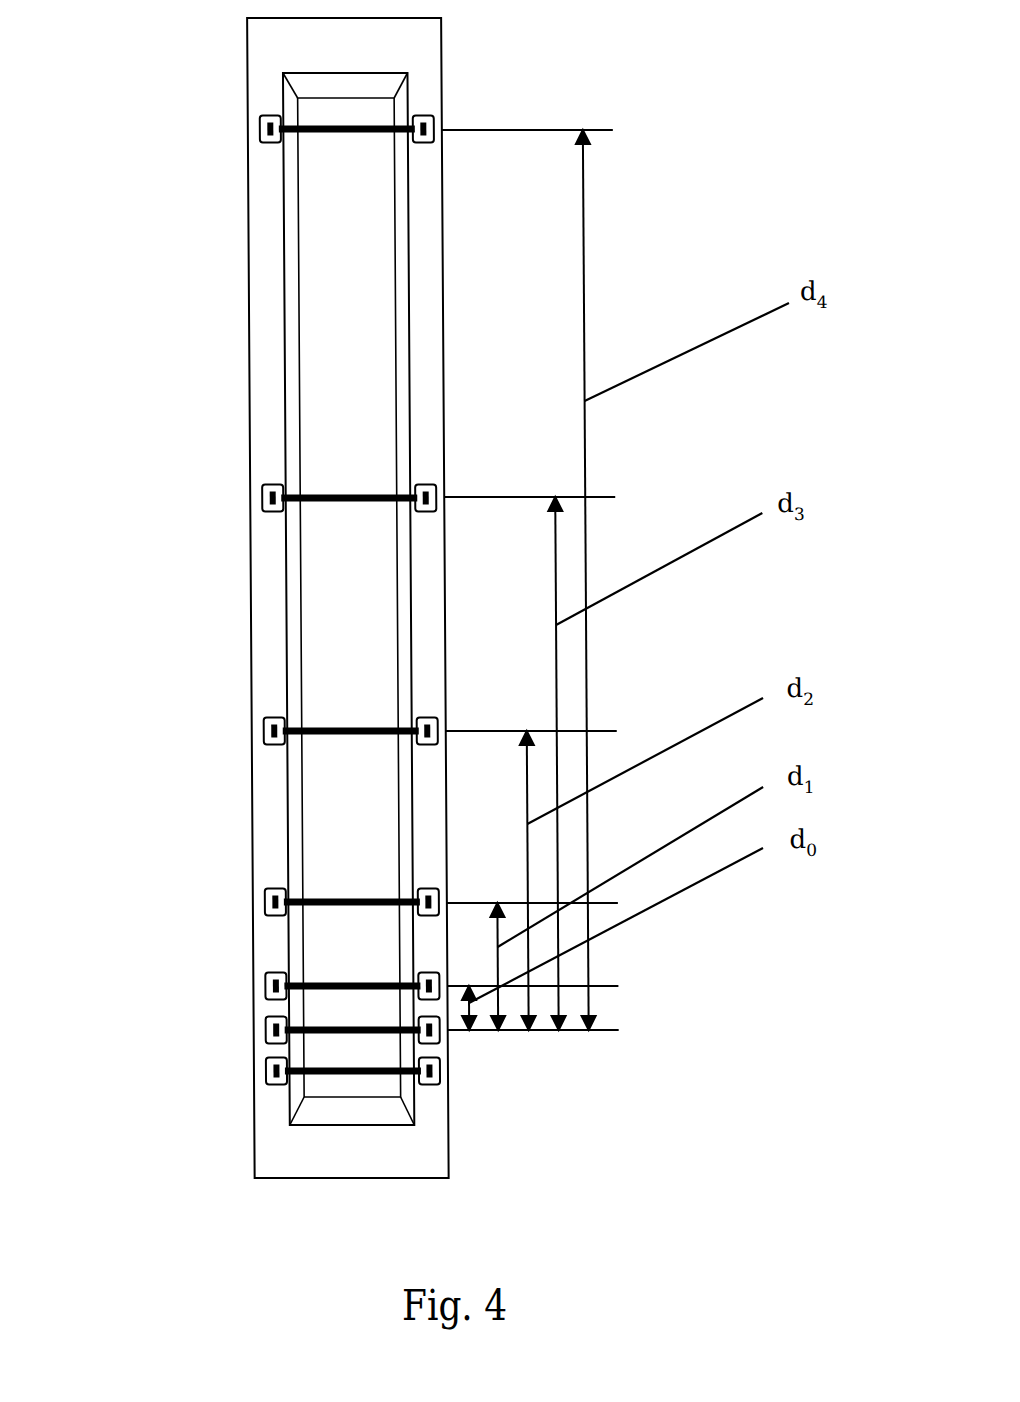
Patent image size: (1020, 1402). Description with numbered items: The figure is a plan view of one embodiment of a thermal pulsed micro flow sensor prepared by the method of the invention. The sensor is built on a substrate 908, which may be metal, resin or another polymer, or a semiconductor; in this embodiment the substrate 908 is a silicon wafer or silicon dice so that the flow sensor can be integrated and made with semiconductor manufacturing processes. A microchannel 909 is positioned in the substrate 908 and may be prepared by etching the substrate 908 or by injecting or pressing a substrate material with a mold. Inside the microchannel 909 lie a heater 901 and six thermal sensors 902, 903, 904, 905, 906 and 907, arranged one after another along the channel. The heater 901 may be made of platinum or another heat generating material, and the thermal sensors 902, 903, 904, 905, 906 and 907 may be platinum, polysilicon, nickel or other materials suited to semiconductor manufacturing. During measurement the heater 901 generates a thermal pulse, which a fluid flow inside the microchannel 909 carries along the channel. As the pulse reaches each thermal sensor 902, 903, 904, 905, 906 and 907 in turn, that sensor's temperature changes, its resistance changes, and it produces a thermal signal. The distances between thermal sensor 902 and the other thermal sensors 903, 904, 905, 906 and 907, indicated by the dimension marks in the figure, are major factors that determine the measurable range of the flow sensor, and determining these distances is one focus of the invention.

The heater 901 is at (259, 1070).
The thermal sensor 902 is at (259, 1027).
The thermal sensor 903 is at (259, 983).
The thermal sensor 904 is at (259, 900).
The thermal sensor 905 is at (259, 728).
The thermal sensor 906 is at (259, 493).
The thermal sensor 907 is at (259, 132).
The substrate 908 is at (248, 328).
The microchannel 909 is at (330, 263).